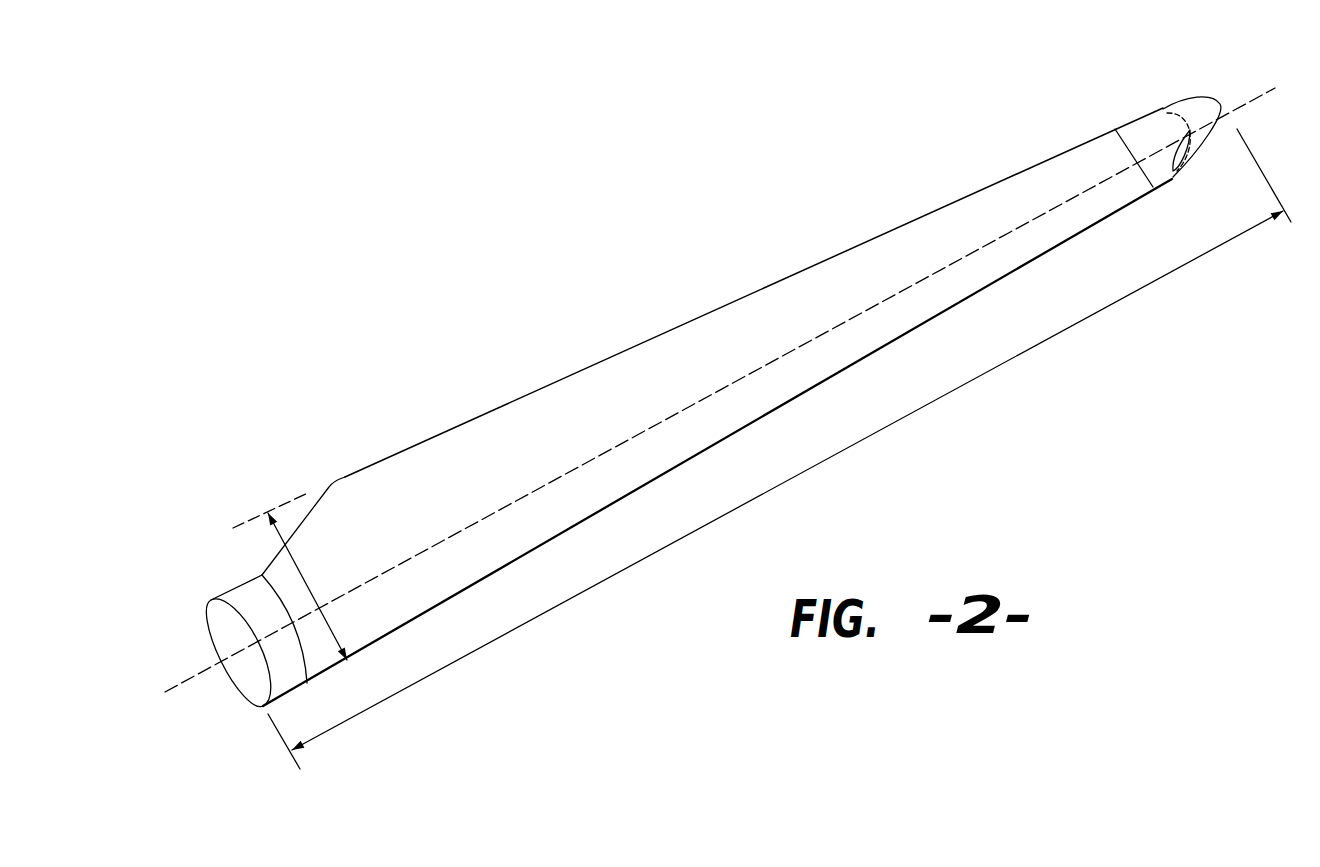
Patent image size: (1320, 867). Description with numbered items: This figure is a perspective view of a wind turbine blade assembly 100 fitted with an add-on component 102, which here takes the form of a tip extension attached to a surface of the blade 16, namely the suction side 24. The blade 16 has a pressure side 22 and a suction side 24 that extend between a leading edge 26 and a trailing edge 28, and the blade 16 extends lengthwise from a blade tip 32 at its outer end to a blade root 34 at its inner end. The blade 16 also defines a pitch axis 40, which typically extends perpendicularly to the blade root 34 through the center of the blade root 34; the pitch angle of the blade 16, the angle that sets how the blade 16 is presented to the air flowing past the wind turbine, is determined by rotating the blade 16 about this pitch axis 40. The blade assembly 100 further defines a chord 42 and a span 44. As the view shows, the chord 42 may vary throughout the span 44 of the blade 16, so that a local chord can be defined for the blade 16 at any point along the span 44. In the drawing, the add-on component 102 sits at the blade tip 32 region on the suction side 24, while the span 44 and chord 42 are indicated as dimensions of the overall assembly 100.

The wind turbine blade assembly 100 is at (540, 273).
The blade 16 is at (509, 384).
The pressure side 22 is at (705, 331).
The leading edge 26 is at (458, 592).
The suction side 24 is at (427, 468).
The pitch axis 40 is at (562, 475).
The trailing edge 28 is at (347, 474).
The blade root 34 is at (265, 668).
The chord 42 is at (272, 578).
The span 44 is at (817, 463).
The blade tip 32 is at (1173, 177).
The add-on component 102 is at (1195, 112).